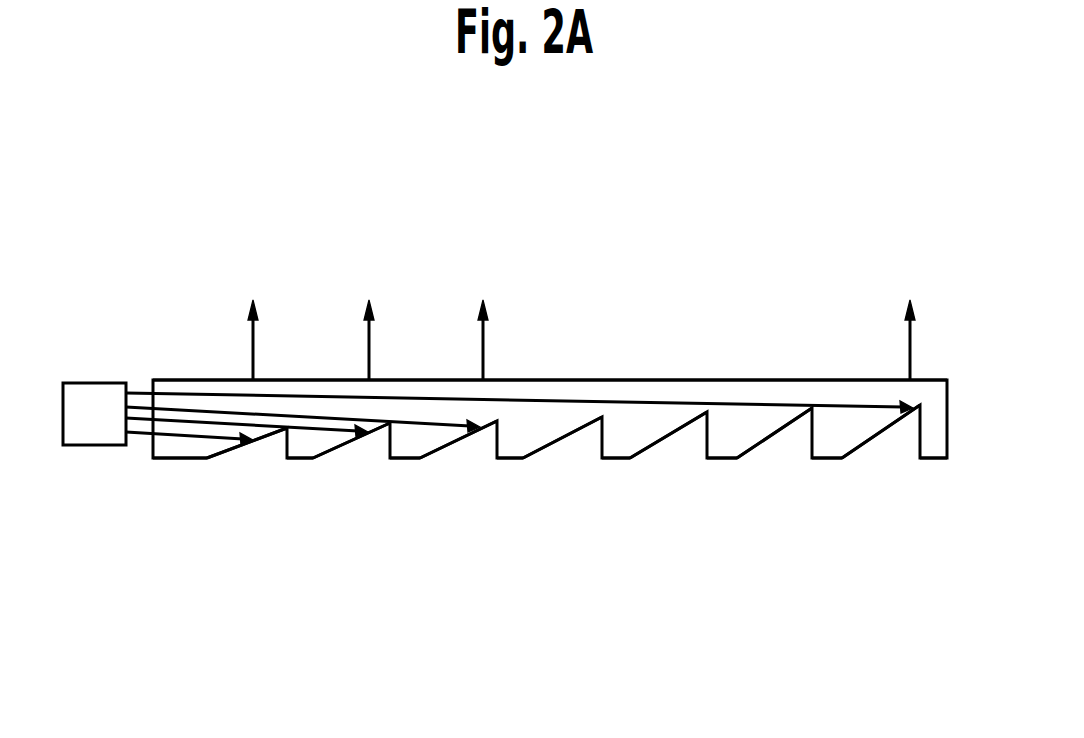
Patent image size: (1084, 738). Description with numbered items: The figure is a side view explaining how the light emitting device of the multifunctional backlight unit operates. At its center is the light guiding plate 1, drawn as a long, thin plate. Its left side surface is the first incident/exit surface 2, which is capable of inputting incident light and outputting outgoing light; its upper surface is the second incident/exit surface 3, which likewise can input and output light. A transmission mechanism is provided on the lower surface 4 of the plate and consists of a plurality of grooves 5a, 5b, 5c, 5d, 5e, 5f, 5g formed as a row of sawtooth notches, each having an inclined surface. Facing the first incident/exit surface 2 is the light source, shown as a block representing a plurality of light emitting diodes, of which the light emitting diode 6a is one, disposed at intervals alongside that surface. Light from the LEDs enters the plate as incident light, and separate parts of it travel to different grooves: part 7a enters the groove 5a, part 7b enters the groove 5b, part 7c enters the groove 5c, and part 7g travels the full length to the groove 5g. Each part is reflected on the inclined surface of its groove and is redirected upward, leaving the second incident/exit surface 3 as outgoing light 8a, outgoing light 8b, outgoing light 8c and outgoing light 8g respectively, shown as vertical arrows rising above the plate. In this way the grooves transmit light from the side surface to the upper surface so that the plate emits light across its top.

The light guiding plate 1 is at (733, 253).
The first incident/exit surface 2 is at (152, 452).
The second incident/exit surface 3 is at (572, 380).
The lower surface 4 is at (410, 458).
The groove 5a is at (272, 437).
The groove 5b is at (352, 441).
The groove 5c is at (455, 442).
The groove 5d is at (578, 430).
The groove 5e is at (680, 428).
The groove 5f is at (785, 426).
The groove 5g is at (889, 426).
The light emitting diode 6a is at (92, 392).
The part of the incident light 7a is at (181, 436).
The part of the incident light 7b is at (204, 424).
The part of the incident light 7c is at (425, 423).
The part of the incident light 7g is at (663, 401).
The outgoing light 8a is at (254, 348).
The outgoing light 8b is at (370, 348).
The outgoing light 8c is at (484, 348).
The outgoing light 8g is at (909, 363).